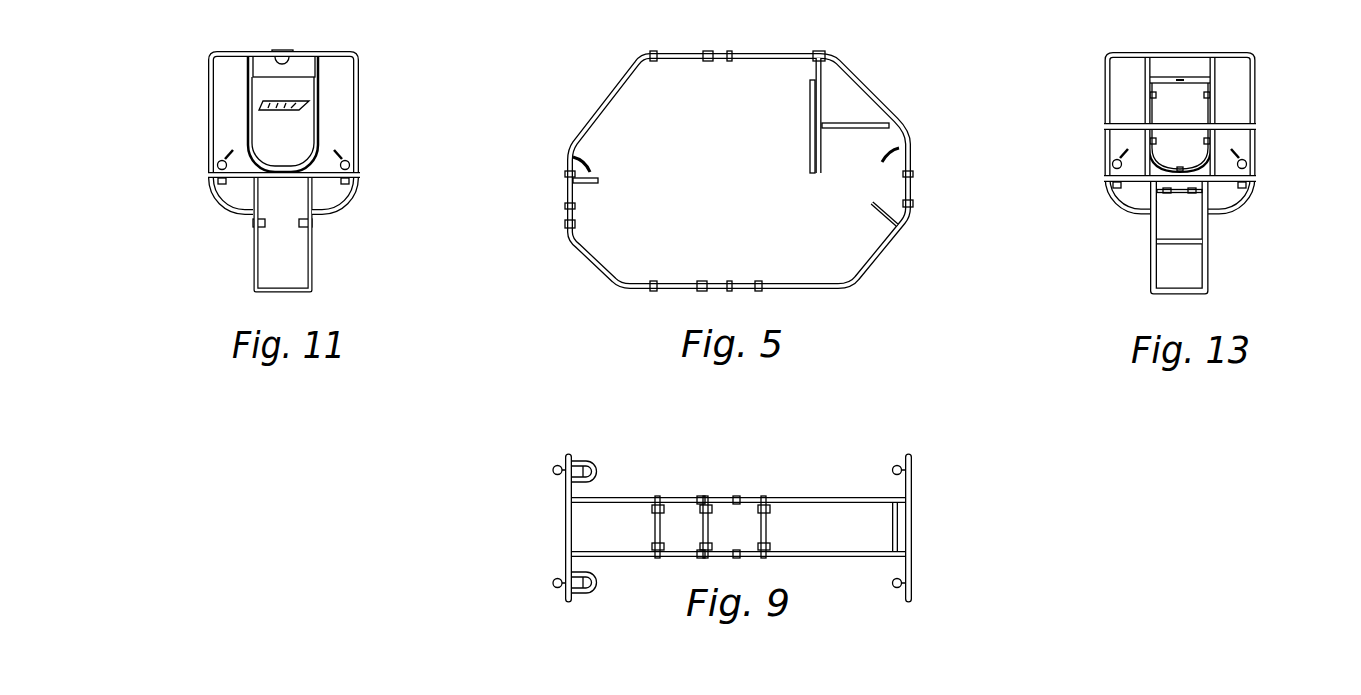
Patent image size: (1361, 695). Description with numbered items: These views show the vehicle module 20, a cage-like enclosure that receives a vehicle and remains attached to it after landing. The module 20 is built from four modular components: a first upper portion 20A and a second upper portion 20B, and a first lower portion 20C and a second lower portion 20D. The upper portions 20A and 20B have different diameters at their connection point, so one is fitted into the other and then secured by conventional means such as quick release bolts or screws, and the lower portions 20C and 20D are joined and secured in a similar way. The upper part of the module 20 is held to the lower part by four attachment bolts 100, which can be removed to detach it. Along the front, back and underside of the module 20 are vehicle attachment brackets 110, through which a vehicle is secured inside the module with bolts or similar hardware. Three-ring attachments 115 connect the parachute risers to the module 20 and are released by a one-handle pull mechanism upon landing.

In FIG. 11, the vehicle module 20 is at (289, 188).
In FIG. 5, the vehicle module 20 is at (726, 190).
In FIG. 13, the vehicle module 20 is at (1182, 197).
In FIG. 9, the vehicle module 20 is at (747, 522).
In FIG. 5, the first upper portion 20A is at (600, 106).
In FIG. 13, the first upper portion 20A is at (1255, 80).
In FIG. 11, the second upper portion 20B is at (360, 88).
In FIG. 5, the second upper portion 20B is at (888, 116).
In FIG. 5, the first lower portion 20C is at (590, 268).
In FIG. 13, the first lower portion 20C is at (1209, 263).
In FIG. 9, the first lower portion 20C is at (627, 557).
In FIG. 11, the second lower portion 20D is at (313, 265).
In FIG. 5, the second lower portion 20D is at (893, 234).
In FIG. 9, the second lower portion 20D is at (830, 557).
In FIG. 5, the attachment bolts 100 is at (547, 186).
In FIG. 9, the vehicle attachment brackets 110 is at (716, 537).
In FIG. 11, the three-ring attachments 115 is at (217, 165).
In FIG. 13, the three-ring attachments 115 is at (1110, 157).
In FIG. 9, the three-ring attachments 115 is at (552, 470).